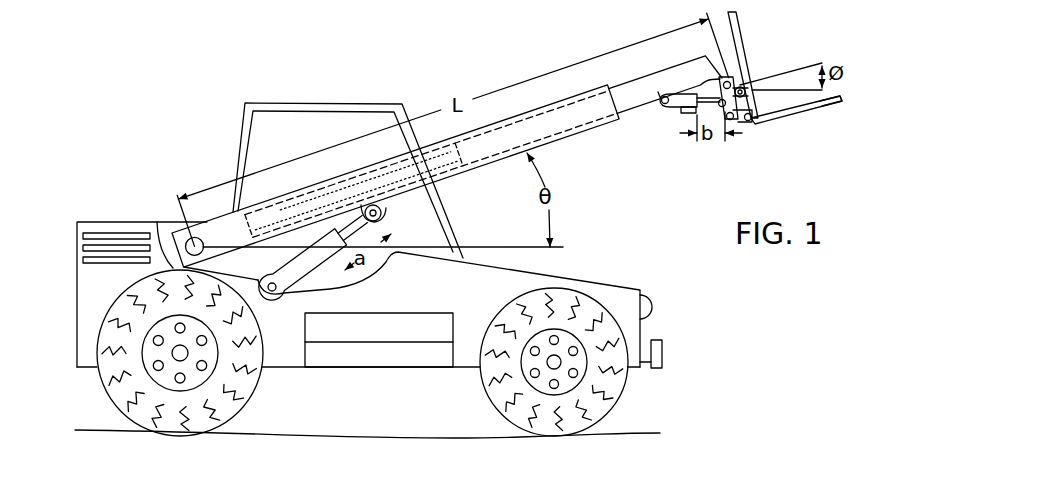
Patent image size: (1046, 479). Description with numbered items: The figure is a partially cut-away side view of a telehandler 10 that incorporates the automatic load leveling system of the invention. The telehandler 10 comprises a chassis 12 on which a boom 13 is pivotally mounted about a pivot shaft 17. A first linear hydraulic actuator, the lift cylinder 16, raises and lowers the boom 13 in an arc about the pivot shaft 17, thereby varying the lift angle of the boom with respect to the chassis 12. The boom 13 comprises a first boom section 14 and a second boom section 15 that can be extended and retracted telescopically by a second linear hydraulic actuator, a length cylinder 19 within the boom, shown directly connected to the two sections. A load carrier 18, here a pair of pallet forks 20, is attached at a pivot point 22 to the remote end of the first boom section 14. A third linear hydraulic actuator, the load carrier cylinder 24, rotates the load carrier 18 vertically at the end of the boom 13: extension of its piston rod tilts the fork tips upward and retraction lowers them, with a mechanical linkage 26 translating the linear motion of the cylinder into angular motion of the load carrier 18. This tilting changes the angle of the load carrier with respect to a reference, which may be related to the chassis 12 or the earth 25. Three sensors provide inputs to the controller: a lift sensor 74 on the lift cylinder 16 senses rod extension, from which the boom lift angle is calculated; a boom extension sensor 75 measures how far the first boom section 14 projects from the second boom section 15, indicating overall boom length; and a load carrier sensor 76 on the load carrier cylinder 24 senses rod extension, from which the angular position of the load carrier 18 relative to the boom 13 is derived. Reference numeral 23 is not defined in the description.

The telehandler 10 is at (686, 326).
The chassis 12 is at (573, 277).
The boom 13 is at (464, 175).
The first boom section 14 is at (651, 87).
The second boom section 15 is at (573, 122).
The lift cylinder 16 is at (292, 292).
The pivot shaft 17 is at (195, 238).
The load carrier 18 is at (778, 120).
The length cylinder 19 is at (277, 222).
The pallet forks 20 is at (818, 106).
The pivot point 22 is at (742, 83).
The boom extension cylinder (hidden) 23 is at (567, 118).
The load carrier cylinder 24 is at (673, 106).
The earth 25 is at (640, 433).
The mechanical linkage 26 is at (742, 118).
The lift sensor 74 is at (327, 254).
The boom extension sensor 75 is at (303, 191).
The load carrier sensor 76 is at (687, 110).